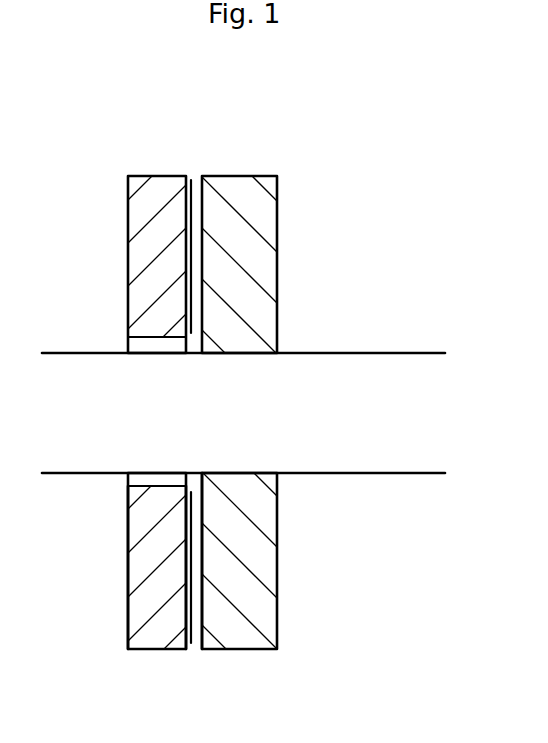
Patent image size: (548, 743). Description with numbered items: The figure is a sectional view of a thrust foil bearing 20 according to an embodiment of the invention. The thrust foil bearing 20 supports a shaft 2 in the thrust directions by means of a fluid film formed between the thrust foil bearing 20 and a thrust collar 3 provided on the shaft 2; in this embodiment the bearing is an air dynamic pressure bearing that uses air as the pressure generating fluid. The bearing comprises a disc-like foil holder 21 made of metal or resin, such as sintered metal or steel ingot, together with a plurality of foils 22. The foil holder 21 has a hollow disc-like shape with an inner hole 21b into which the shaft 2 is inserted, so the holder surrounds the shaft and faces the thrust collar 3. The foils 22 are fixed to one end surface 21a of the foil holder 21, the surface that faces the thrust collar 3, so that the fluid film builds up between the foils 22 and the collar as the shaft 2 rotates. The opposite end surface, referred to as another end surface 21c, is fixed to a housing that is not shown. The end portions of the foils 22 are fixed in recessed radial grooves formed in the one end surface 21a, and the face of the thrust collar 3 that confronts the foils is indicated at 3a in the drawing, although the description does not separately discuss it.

The shaft 2 is at (383, 370).
The thrust collar 3 is at (262, 220).
The side surface of fixed member 3a is at (200, 582).
The thrust foil bearing 20 is at (150, 170).
The foil holder 21 is at (135, 258).
The end surface 21a is at (190, 547).
The inner hole 21b is at (137, 341).
The another end surface 21c is at (128, 583).
The foils 22 is at (192, 203).